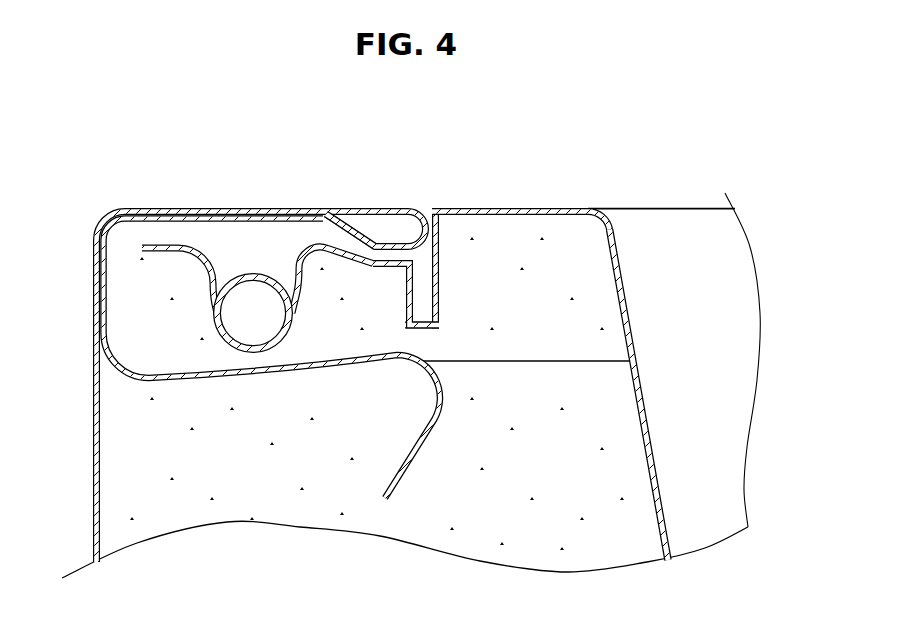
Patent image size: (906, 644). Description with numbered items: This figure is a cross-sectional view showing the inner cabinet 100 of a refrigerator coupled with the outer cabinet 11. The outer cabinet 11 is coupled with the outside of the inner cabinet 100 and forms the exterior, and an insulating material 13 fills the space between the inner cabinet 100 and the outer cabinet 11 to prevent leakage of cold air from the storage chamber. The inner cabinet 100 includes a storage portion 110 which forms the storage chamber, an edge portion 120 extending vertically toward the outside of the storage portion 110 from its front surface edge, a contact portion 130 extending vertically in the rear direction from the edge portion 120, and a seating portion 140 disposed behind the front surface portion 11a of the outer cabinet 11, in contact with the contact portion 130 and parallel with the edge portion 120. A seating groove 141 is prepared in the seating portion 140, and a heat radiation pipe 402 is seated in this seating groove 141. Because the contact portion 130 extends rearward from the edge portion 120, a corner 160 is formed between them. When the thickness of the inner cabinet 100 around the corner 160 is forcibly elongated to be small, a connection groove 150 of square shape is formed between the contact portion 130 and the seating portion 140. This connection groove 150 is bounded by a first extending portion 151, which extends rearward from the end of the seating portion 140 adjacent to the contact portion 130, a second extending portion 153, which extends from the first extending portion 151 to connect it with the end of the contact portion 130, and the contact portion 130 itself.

The outer cabinet 11 is at (95, 368).
The front surface portion 11a is at (205, 209).
The insulating material 13 is at (121, 443).
The inner cabinet 100 is at (548, 208).
The storage portion 110 is at (626, 293).
The edge portion 120 is at (502, 212).
The contact portion 130 is at (440, 257).
The seating portion 140 is at (363, 238).
The seating groove 141 is at (213, 315).
The connection groove 150 is at (424, 289).
The first extending portion 151 is at (406, 308).
The second extending portion 153 is at (431, 330).
The corner 160 is at (435, 228).
The heat radiation pipe 402 is at (254, 274).